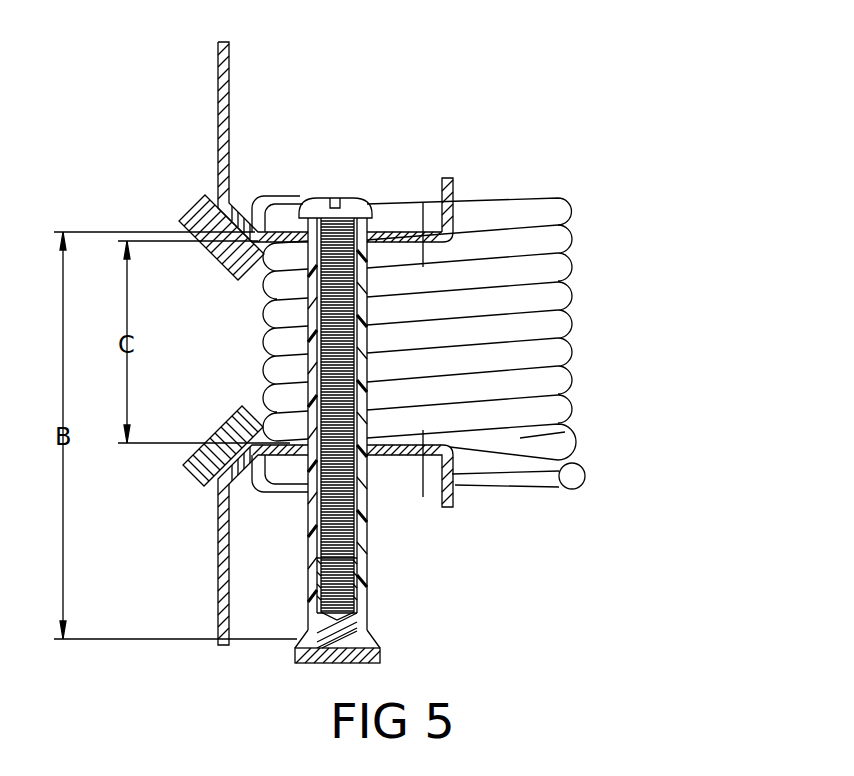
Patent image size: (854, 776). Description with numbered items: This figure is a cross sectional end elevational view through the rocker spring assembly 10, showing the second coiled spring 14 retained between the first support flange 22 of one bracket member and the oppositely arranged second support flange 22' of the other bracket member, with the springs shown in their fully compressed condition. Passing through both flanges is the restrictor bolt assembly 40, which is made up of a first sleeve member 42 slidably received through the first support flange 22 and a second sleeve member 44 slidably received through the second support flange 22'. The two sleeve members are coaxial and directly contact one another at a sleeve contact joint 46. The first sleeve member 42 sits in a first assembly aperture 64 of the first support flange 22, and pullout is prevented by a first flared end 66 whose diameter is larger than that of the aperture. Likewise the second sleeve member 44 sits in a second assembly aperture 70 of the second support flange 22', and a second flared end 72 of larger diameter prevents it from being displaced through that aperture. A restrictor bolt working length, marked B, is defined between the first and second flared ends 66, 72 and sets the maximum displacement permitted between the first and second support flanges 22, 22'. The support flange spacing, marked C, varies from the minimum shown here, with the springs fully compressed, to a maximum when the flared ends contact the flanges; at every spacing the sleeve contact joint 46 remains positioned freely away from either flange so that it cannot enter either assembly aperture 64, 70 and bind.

The rocker spring assembly 10 is at (652, 131).
The second coiled spring 14 is at (577, 327).
The first support flange 22 is at (343, 180).
The second support flange 22' is at (356, 545).
The restrictor bolt assembly 40 is at (382, 524).
The first sleeve member 42 is at (448, 180).
The second sleeve member 44 is at (362, 570).
The sleeve contact joint 46 is at (545, 427).
The first assembly aperture 64 is at (314, 198).
The first flared end 66 is at (371, 216).
The second assembly aperture 70 is at (306, 490).
The second flared end 72 is at (371, 650).